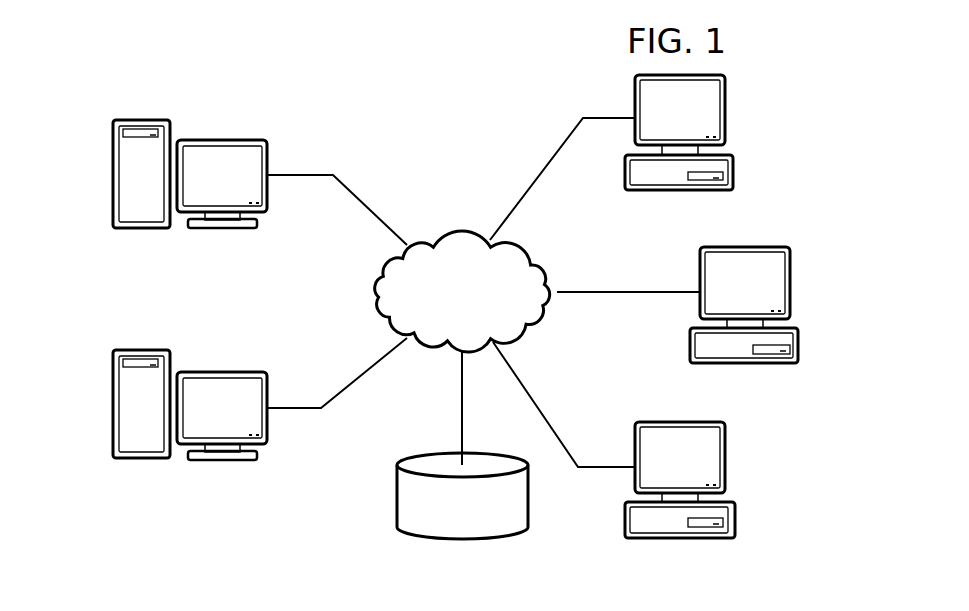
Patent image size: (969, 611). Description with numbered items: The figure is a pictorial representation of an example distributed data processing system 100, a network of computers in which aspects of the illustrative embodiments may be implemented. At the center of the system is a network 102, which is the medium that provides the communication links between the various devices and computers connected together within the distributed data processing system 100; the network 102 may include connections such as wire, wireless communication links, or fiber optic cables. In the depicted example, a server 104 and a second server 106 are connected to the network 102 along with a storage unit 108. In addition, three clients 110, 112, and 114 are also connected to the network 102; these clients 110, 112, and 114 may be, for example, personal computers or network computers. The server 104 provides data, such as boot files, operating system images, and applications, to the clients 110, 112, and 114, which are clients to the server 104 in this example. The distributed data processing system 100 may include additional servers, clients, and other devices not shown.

The distributed data processing system 100 is at (334, 86).
The network 102 is at (457, 233).
The server 104 is at (113, 173).
The server 106 is at (113, 407).
The storage unit 108 is at (397, 498).
The client 110 is at (733, 170).
The client 112 is at (798, 347).
The client 114 is at (735, 520).